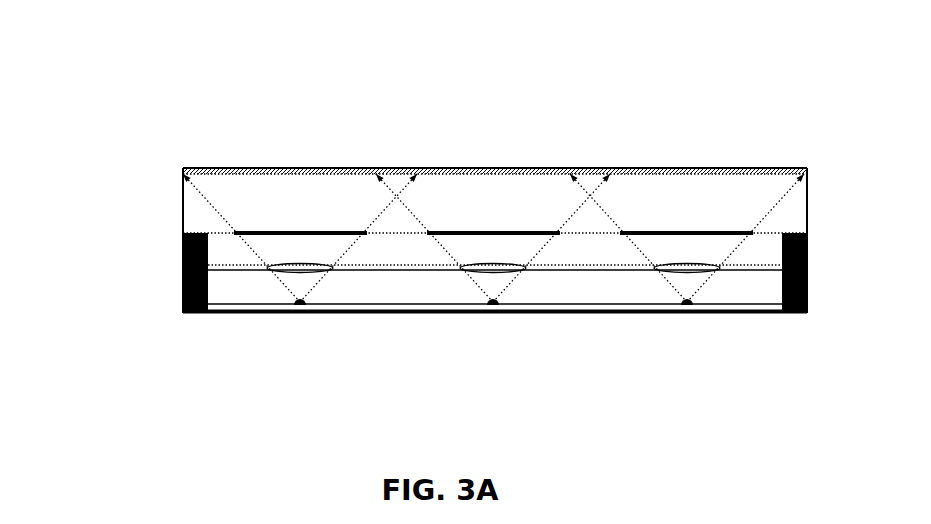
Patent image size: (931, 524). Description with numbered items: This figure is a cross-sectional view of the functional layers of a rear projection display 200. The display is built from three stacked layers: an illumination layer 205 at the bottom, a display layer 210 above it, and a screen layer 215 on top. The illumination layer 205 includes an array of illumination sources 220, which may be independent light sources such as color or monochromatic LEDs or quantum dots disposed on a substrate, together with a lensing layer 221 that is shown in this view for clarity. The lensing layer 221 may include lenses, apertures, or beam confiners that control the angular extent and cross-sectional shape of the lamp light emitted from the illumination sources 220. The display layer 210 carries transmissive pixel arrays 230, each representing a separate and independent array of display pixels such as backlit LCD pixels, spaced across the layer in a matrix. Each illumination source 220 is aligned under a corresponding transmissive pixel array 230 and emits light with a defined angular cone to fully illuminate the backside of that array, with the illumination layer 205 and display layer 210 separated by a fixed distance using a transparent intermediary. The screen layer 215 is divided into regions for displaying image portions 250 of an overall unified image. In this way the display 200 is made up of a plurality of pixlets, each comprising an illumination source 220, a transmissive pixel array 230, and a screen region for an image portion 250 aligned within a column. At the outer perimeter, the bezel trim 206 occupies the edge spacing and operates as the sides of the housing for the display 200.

The rear projection display 200 is at (186, 85).
The screen layer 215 is at (172, 218).
The display layer 210 is at (172, 233).
The illumination layer 205 is at (172, 242).
The transmissive pixel array 230 is at (305, 230).
The illumination source 220 is at (303, 308).
The image portion 250 is at (807, 162).
The lensing layer 221 is at (245, 272).
The bezel trim 206 is at (797, 315).